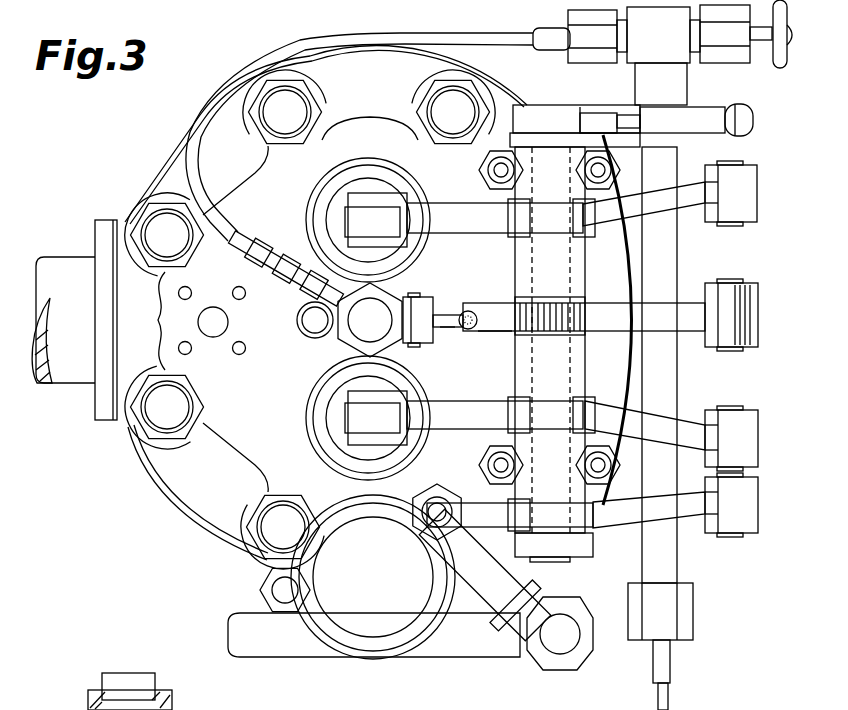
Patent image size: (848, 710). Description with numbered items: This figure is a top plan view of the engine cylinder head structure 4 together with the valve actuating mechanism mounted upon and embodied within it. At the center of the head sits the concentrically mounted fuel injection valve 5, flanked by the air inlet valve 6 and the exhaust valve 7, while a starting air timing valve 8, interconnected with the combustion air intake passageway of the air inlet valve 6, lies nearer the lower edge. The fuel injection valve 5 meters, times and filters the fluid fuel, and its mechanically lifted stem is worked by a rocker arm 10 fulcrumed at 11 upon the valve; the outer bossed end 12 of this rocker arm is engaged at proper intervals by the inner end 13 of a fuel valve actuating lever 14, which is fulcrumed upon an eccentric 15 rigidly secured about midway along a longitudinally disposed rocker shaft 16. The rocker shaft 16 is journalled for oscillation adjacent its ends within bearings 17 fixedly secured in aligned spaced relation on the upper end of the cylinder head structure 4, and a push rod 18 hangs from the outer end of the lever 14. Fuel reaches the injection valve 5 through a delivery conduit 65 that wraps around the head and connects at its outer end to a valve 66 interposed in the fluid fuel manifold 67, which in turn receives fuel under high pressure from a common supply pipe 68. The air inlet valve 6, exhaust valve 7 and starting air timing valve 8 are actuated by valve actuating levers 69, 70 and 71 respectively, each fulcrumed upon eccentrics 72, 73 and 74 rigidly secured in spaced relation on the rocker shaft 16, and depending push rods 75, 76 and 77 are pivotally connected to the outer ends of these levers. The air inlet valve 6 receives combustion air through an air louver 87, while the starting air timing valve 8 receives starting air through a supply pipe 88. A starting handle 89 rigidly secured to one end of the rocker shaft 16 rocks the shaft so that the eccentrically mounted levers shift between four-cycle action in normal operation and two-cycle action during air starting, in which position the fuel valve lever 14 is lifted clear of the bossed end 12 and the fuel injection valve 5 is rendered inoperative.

The cylinder head structure 4 is at (248, 445).
The fuel injection valve 5 is at (340, 345).
The air inlet valve 6 is at (330, 426).
The exhaust valve 7 is at (335, 210).
The starting air timing valve 8 is at (438, 498).
The rocker arm 10 is at (450, 329).
The fulcrum 11 is at (420, 295).
The outer bossed end 12 is at (466, 308).
The inner end 13 is at (481, 333).
The fuel valve actuating lever 14 is at (584, 316).
The eccentric 15 is at (503, 335).
The rocker shaft 16 is at (528, 270).
The bearings 17 is at (549, 317).
The push rod 18 is at (752, 291).
The delivery conduit 65 is at (247, 75).
The valve 66 is at (680, 52).
The fluid fuel manifold 67 is at (660, 565).
The supply pipe 68 is at (668, 696).
The valve actuating lever 69 is at (653, 423).
The valve actuating lever 70 is at (687, 205).
The valve actuating lever 71 is at (633, 528).
The eccentric 72 is at (532, 415).
The eccentric 73 is at (535, 217).
The eccentric 74 is at (590, 512).
The push rod 75 is at (750, 410).
The push rod 76 is at (752, 218).
The push rod 77 is at (752, 523).
The air louver 87 is at (373, 577).
The supply pipe 88 is at (475, 643).
The starting handle 89 is at (697, 118).